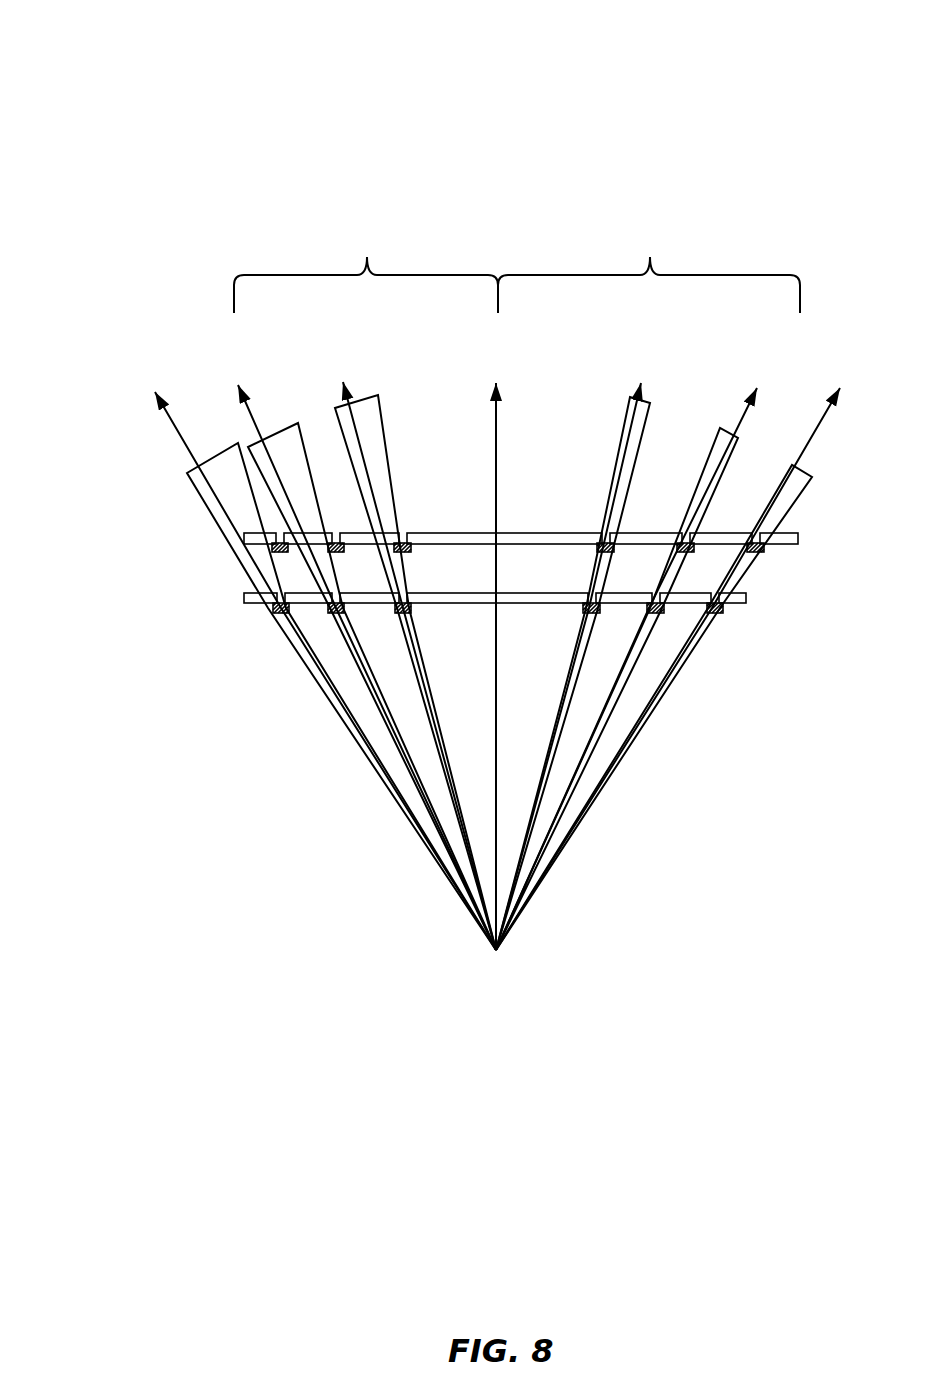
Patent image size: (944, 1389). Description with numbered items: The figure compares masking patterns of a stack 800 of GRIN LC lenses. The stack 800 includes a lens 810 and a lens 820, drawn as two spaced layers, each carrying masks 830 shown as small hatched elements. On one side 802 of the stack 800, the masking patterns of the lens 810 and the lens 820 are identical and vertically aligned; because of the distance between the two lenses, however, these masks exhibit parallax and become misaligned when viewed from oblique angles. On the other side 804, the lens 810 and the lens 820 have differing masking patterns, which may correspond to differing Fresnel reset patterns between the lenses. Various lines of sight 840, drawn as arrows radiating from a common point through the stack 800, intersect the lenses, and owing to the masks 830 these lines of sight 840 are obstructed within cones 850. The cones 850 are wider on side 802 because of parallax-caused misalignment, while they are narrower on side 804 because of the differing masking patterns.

The stack of GRIN LC lenses 800 is at (97, 91).
The side of stack 802 is at (366, 270).
The side of stack 804 is at (649, 270).
The lens 810 is at (747, 598).
The lens 820 is at (799, 540).
The masks 830 is at (275, 613).
The lines of sight 840 is at (183, 433).
The cones 850 is at (221, 533).